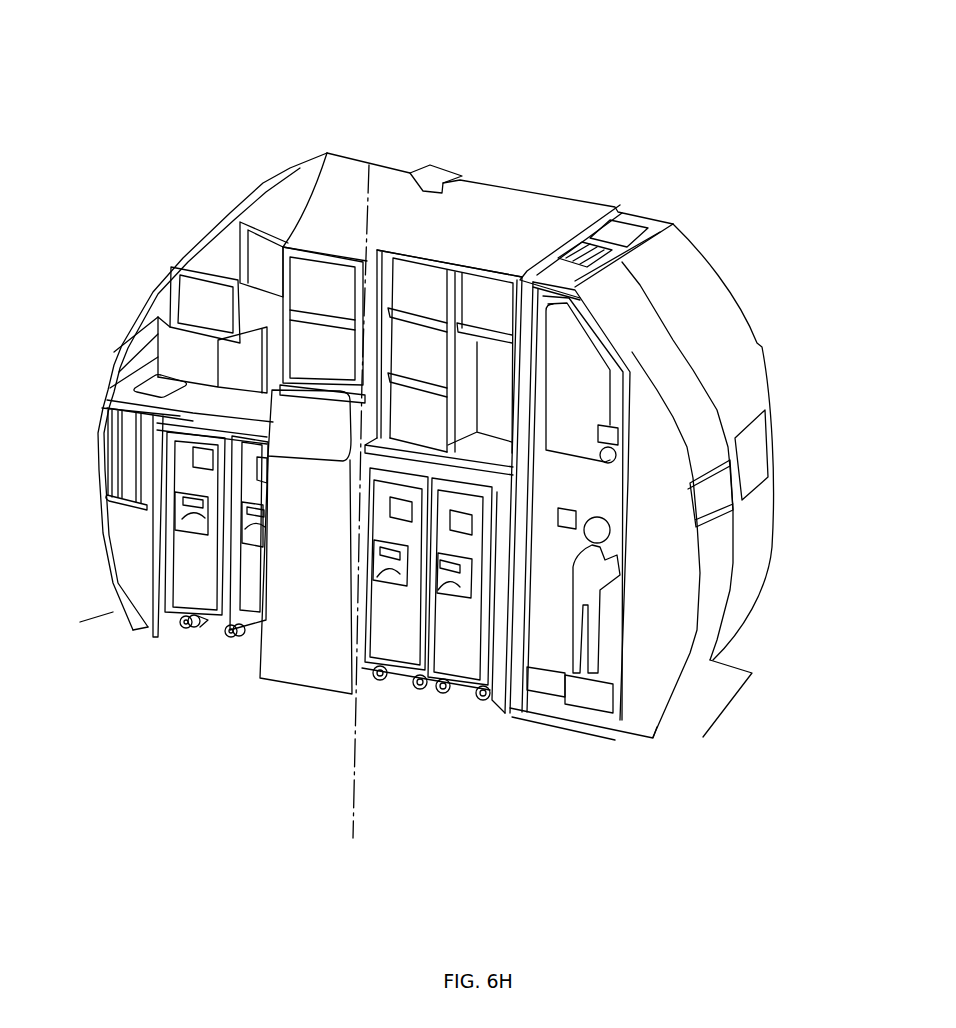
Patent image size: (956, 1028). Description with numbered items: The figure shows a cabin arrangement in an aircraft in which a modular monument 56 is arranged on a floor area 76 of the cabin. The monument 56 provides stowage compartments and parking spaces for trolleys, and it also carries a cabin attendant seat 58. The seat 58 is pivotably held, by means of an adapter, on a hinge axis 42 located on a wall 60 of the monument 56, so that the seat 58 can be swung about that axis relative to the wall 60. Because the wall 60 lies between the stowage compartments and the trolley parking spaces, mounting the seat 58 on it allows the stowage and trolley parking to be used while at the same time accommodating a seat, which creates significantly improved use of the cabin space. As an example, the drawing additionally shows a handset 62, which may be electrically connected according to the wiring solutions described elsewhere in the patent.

The modular monument 56 is at (422, 120).
The hinge axis 42 is at (420, 215).
The wall 60 is at (367, 263).
The handset 62 is at (270, 413).
The cabin attendant seat 58 is at (318, 645).
The floor area 76 is at (703, 712).